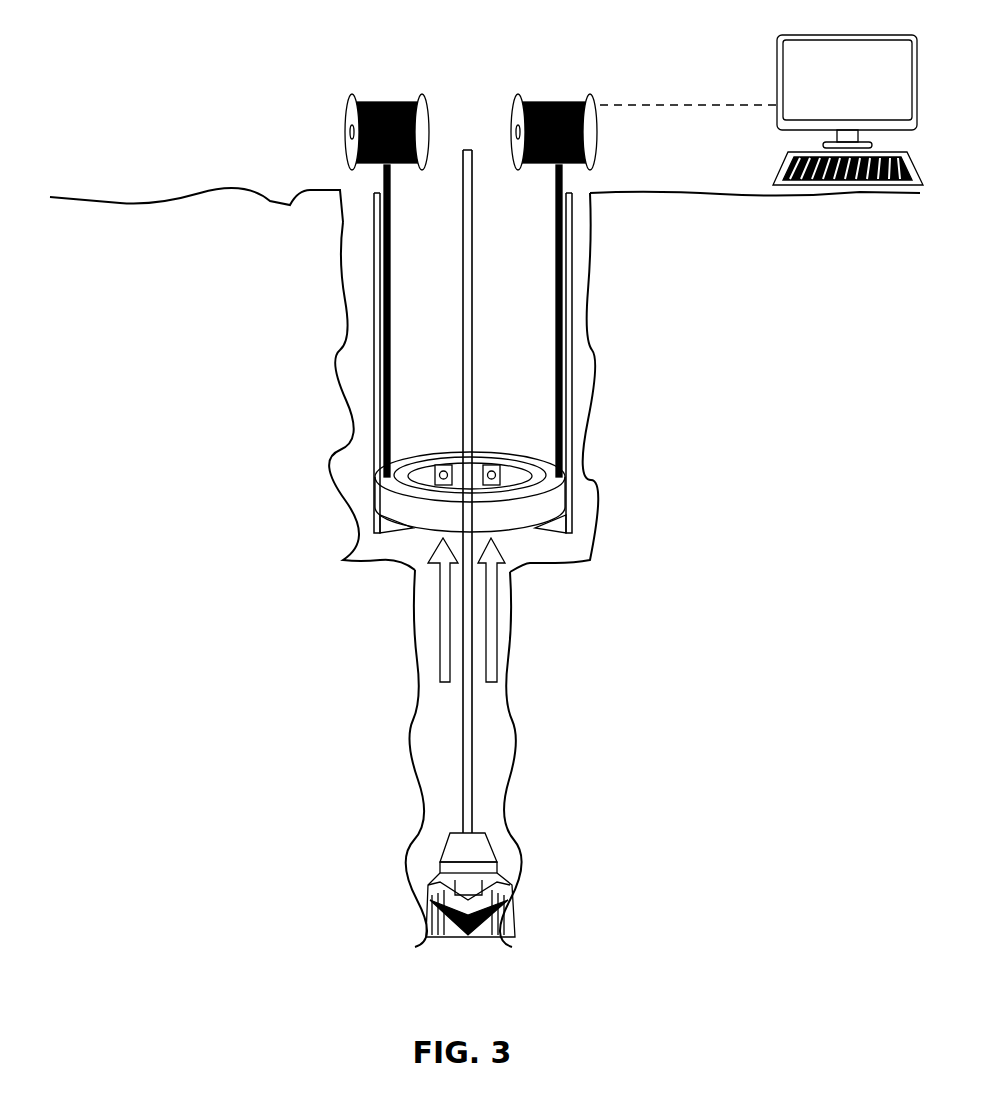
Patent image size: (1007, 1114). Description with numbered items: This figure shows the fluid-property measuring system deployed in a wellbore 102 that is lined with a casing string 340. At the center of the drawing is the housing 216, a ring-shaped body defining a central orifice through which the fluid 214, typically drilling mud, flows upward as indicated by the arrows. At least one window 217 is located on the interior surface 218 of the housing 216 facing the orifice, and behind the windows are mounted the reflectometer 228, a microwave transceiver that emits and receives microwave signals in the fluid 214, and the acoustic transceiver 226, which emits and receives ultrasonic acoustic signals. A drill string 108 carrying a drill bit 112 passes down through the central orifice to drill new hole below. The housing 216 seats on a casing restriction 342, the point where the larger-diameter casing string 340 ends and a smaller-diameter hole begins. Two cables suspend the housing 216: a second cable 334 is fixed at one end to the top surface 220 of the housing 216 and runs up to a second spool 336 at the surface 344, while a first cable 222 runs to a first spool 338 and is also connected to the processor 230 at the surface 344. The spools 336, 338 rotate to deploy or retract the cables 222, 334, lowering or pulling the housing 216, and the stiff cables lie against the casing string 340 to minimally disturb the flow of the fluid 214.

The wellbore 102 is at (513, 723).
The drill string 108 is at (478, 790).
The drill bit 112 is at (497, 868).
The fluid 214 is at (438, 648).
The housing 216 is at (448, 436).
The window 217 is at (488, 466).
The interior surface 218 is at (430, 455).
The top surface 220 is at (540, 460).
The first cable 222 is at (560, 313).
The acoustic transceiver 226 is at (385, 518).
The reflectometer 228 is at (565, 518).
The processor 230 is at (829, 94).
The second cable 334 is at (385, 348).
The second spool 336 is at (345, 112).
The first spool 338 is at (578, 100).
The casing string 340 is at (373, 300).
The casing restriction 342 is at (388, 556).
The surface 344 is at (92, 195).